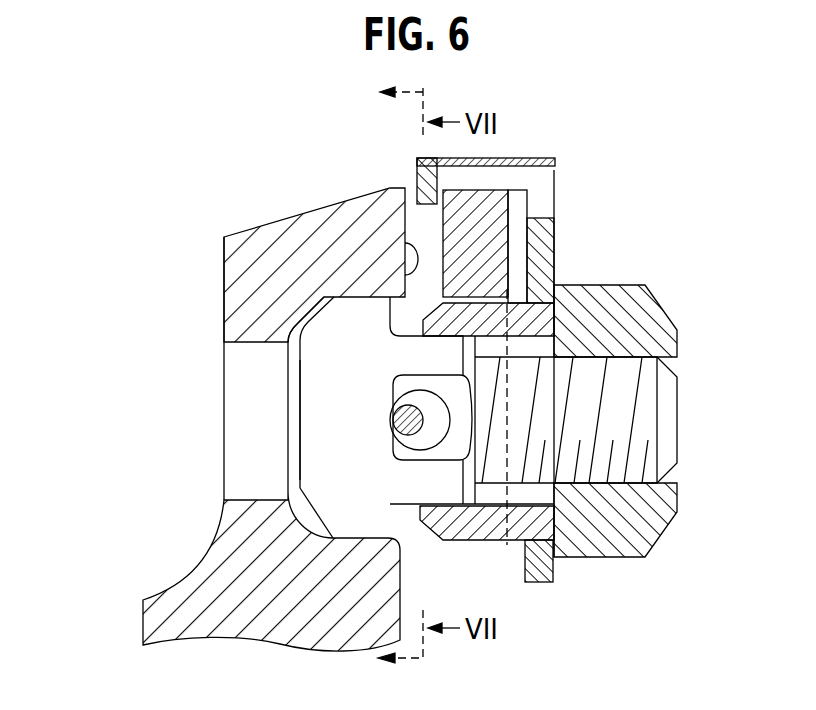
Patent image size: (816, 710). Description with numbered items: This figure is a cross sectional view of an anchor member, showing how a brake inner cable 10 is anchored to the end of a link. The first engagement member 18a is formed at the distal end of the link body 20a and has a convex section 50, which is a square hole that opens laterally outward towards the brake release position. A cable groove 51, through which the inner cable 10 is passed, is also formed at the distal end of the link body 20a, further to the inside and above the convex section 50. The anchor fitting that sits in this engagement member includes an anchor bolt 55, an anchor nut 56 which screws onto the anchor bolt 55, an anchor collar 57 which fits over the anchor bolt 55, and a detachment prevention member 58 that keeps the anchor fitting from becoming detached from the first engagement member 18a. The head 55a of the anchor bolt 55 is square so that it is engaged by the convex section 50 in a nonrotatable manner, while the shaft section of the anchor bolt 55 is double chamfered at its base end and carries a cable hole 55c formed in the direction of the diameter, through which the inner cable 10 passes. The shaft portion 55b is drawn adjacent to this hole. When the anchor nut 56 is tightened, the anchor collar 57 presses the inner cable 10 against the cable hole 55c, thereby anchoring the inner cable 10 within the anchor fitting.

The inner cable 10 is at (396, 430).
The first engagement member 18a is at (304, 510).
The link body 20a is at (150, 626).
The convex section 50 is at (300, 314).
The cable groove 51 is at (405, 244).
The anchor bolt 55 is at (318, 384).
The head 55a is at (312, 458).
The channel bottom piece 55b is at (447, 490).
The cable hole 55c is at (442, 432).
The anchor nut 56 is at (645, 315).
The anchor collar 57 is at (538, 300).
The detachment prevention member 58 is at (568, 228).